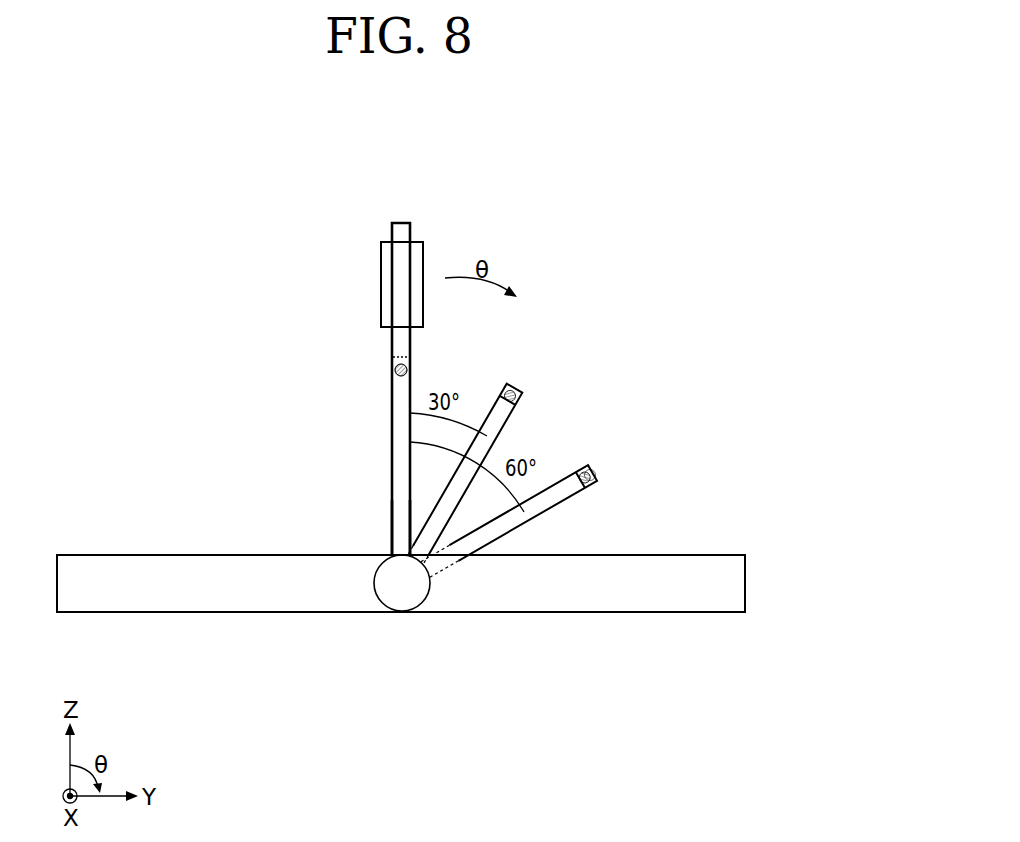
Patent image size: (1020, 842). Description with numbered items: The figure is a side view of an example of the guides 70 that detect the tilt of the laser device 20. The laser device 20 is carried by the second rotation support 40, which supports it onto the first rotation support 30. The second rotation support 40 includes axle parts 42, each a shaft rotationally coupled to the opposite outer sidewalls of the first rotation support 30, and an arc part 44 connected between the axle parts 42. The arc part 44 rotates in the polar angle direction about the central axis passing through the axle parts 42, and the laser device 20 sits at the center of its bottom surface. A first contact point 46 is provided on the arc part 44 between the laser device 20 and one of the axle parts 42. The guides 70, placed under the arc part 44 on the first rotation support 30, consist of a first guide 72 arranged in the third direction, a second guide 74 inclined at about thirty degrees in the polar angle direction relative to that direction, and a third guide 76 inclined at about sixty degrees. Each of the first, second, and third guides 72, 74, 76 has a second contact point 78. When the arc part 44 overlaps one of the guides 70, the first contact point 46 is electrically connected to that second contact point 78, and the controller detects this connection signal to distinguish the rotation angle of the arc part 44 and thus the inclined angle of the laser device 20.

The laser device 20 is at (382, 284).
The first rotation support 30 is at (733, 583).
The second rotation support 40 is at (386, 612).
The axle parts 42 is at (402, 600).
The arc part 44 is at (402, 523).
The first contact point 46 is at (396, 372).
The guides 70 is at (582, 400).
The first guide 72 is at (396, 357).
The second guide 74 is at (514, 388).
The third guide 76 is at (598, 470).
The second contact points 78 is at (399, 386).